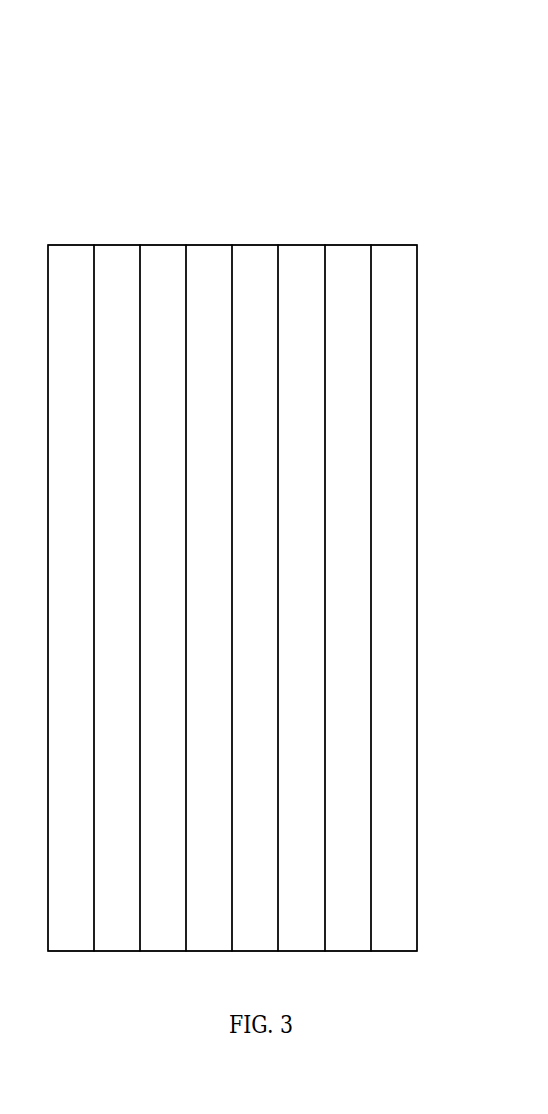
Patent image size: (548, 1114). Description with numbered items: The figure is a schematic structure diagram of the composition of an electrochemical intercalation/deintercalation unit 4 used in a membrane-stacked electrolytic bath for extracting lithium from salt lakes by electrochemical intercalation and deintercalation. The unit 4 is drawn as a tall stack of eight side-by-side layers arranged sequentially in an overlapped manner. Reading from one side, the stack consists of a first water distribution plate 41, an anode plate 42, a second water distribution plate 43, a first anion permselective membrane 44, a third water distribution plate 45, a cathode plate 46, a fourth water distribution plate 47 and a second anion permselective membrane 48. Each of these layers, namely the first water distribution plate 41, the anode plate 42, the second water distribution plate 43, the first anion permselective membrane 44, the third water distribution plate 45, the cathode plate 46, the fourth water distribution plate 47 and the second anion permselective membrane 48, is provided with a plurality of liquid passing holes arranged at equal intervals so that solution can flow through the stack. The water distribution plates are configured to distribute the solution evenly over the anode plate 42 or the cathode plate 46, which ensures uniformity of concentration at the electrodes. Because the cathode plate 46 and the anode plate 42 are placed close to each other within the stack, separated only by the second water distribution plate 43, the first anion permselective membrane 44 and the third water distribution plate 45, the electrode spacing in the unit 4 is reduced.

The electrochemical intercalation/deintercalation unit 4 is at (188, 82).
The first water distribution plate 41 is at (393, 258).
The anode plate 42 is at (340, 258).
The second water distribution plate 43 is at (295, 258).
The first anion permselective membrane 44 is at (249, 258).
The third water distribution plate 45 is at (203, 258).
The cathode plate 46 is at (162, 258).
The fourth water distribution plate 47 is at (113, 258).
The second anion permselective membrane 48 is at (62, 257).